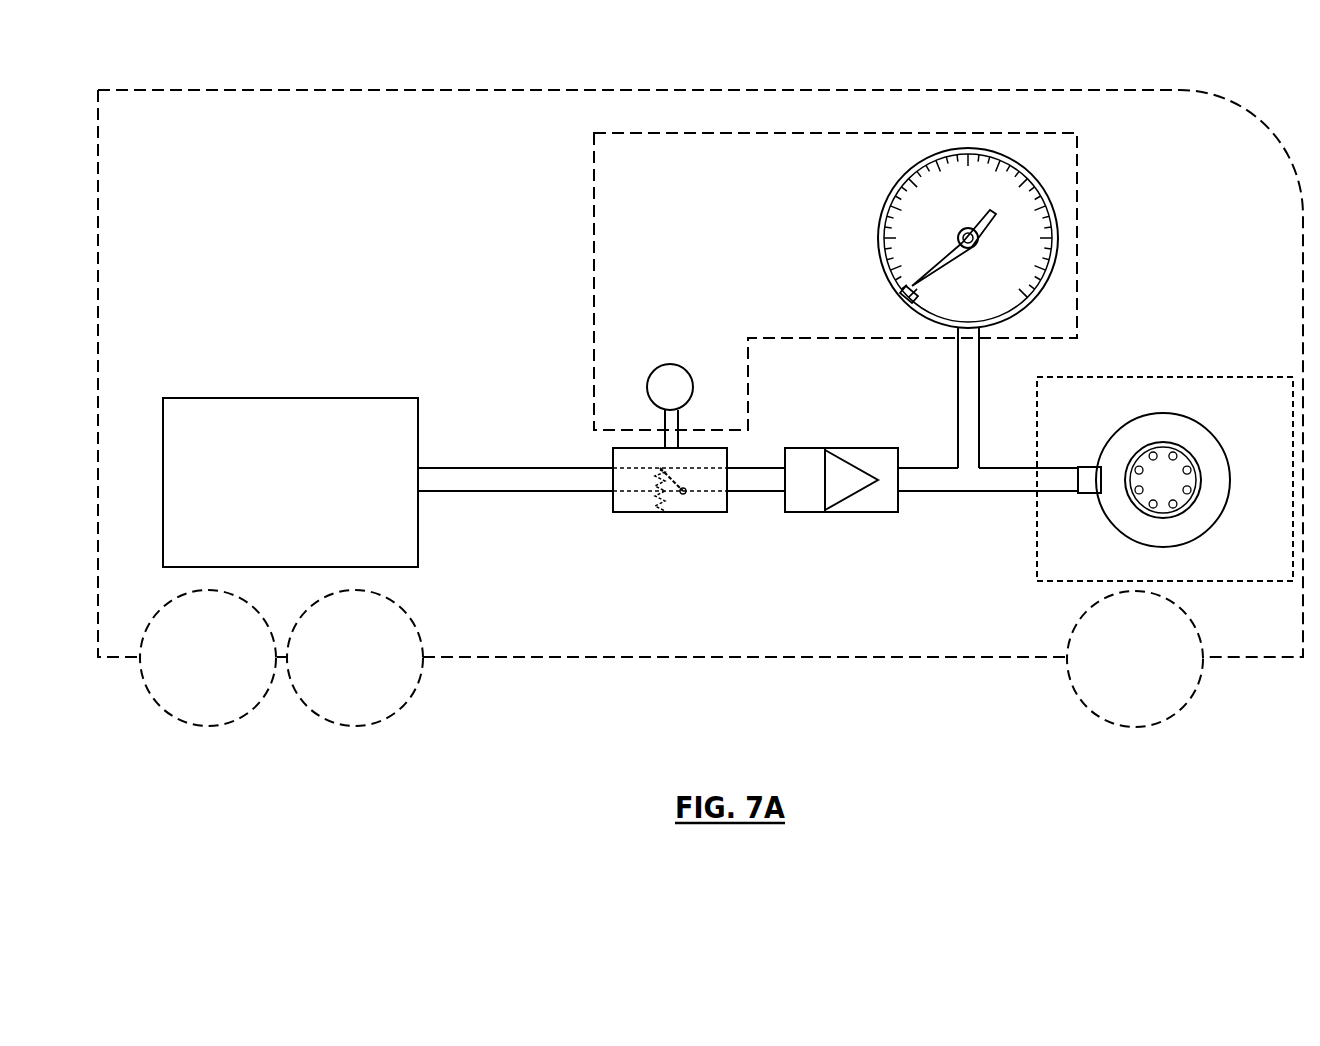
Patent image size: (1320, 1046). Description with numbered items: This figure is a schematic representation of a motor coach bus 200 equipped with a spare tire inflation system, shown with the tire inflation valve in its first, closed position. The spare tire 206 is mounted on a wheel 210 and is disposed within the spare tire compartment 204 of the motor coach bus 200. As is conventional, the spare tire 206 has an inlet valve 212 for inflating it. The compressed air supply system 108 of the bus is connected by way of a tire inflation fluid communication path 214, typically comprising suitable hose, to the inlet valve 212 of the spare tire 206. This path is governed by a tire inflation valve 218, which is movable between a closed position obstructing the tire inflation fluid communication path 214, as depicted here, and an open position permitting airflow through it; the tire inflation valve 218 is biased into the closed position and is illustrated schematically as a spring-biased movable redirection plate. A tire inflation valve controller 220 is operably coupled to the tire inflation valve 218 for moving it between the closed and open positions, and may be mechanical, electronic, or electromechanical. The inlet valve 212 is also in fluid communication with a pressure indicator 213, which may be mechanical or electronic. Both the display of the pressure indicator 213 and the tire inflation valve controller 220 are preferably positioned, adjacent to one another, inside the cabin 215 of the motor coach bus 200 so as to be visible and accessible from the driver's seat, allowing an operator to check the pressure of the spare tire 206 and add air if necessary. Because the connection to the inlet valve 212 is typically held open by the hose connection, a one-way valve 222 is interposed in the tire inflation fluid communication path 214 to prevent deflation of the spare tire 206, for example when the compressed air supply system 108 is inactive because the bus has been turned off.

The motor coach bus 200 is at (243, 86).
The compressed air supply system 108 is at (348, 398).
The spare tire compartment 204 is at (1262, 567).
The spare tire 206 is at (1162, 423).
The wheel 210 is at (1171, 480).
The inlet valve 212 is at (1085, 467).
The pressure indicator 213 is at (1057, 212).
The tire inflation fluid communication path 214 is at (522, 492).
The cabin 215 is at (668, 180).
The tire inflation valve 218 is at (657, 512).
The tire inflation valve controller 220 is at (672, 364).
The one-way valve 222 is at (845, 448).